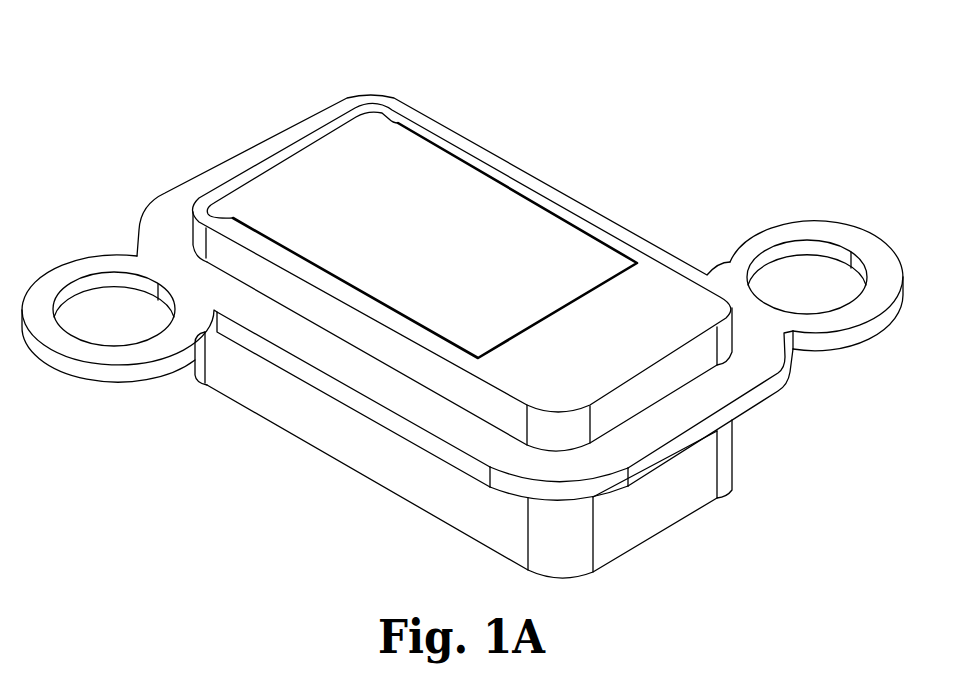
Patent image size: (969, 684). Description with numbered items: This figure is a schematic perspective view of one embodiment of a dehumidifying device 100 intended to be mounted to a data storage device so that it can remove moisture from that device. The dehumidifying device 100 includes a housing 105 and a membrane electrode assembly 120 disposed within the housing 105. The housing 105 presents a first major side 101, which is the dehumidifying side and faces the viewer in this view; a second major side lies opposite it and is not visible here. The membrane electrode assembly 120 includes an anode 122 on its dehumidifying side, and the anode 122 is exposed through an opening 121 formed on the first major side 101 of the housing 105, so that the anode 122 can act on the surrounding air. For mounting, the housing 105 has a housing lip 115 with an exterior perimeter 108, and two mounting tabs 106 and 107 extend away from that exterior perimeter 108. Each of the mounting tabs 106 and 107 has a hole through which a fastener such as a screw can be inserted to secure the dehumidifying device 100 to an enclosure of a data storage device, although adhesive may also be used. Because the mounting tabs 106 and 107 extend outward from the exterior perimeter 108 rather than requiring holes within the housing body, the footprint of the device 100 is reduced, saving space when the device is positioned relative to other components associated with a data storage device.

The dehumidifying device 100 is at (550, 56).
The first major side 101 is at (627, 344).
The housing 105 is at (792, 378).
The mounting tab 106 is at (820, 231).
The mounting tab 107 is at (124, 372).
The exterior perimeter 108 is at (668, 452).
The housing lip 115 is at (695, 424).
The membrane electrode assembly 120 is at (331, 168).
The opening 121 is at (572, 258).
The anode 122 is at (440, 247).